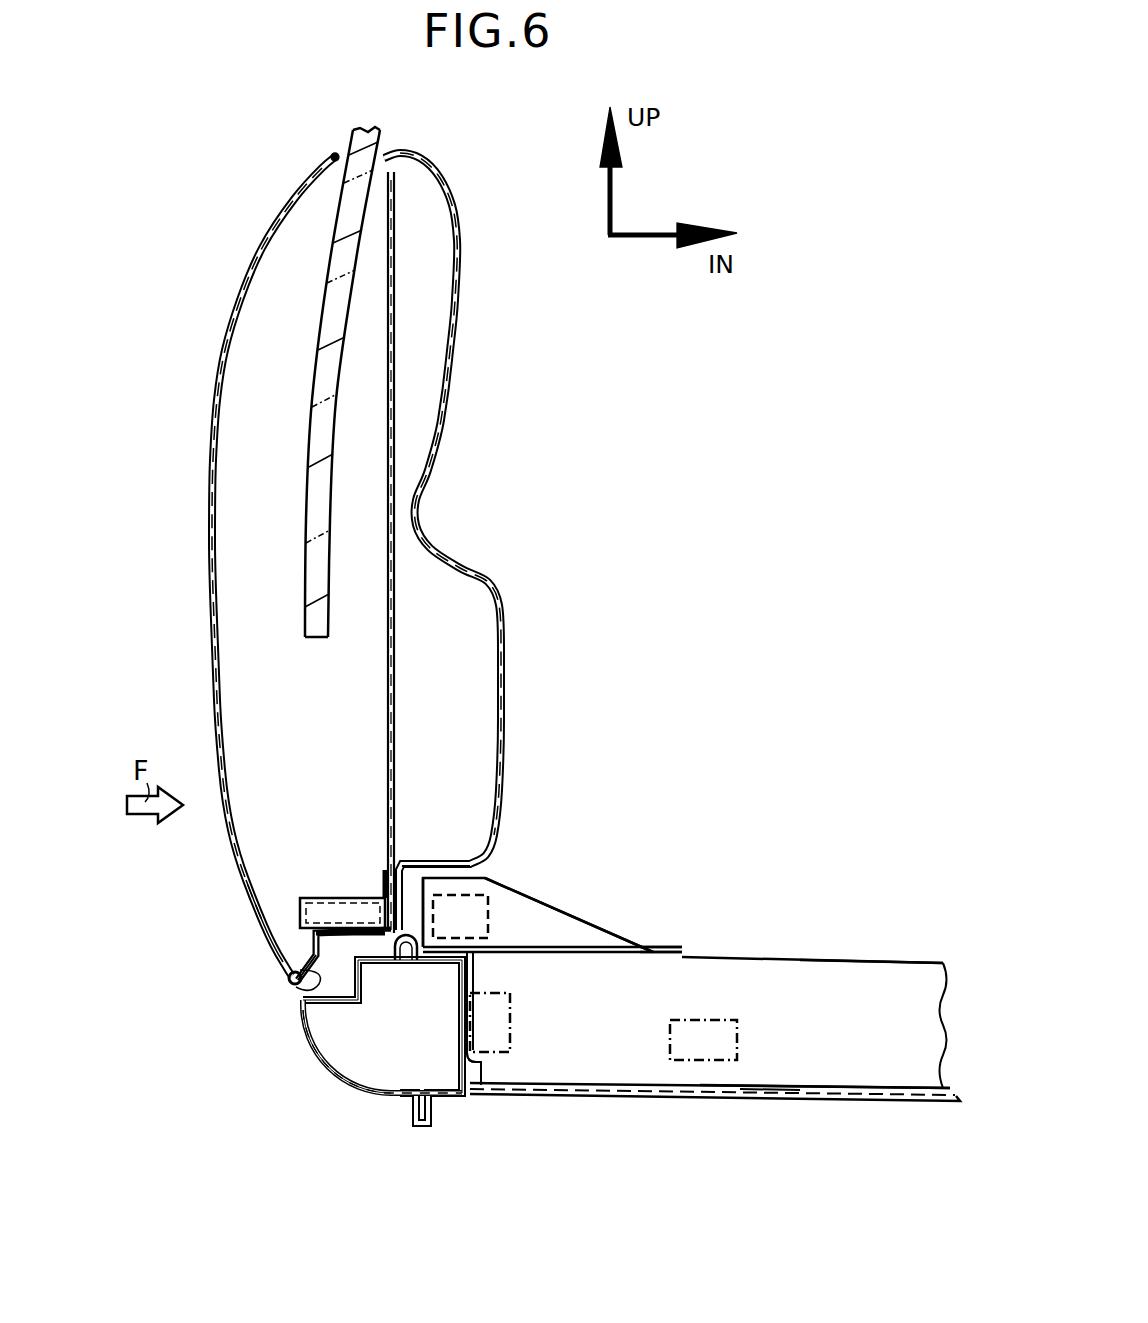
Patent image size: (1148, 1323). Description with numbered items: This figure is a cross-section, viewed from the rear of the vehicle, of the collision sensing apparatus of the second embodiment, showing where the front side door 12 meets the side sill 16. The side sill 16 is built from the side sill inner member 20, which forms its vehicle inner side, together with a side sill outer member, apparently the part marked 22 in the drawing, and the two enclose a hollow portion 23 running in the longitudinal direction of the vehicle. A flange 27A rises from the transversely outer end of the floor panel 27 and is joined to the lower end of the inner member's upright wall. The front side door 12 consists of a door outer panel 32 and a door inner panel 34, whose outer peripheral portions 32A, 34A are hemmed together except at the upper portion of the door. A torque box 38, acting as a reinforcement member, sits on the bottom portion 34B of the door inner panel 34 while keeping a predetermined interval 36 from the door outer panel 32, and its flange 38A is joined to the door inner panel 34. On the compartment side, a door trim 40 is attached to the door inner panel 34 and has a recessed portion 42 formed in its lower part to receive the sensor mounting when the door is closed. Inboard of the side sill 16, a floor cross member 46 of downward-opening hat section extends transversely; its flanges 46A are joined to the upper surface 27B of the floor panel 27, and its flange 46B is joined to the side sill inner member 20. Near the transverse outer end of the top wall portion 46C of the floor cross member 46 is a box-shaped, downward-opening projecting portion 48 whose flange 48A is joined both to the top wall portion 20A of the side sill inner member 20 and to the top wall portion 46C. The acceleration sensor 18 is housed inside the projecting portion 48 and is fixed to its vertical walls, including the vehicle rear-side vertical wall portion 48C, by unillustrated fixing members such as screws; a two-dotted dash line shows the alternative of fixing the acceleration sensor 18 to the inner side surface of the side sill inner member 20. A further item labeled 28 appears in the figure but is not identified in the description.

The front side door 12 is at (135, 563).
The side sill 16 is at (422, 1203).
The acceleration sensor 18 is at (481, 892).
The side sill inner member 20 is at (447, 1112).
The top wall portion 20A is at (393, 966).
The roof side rail outer panel 22 is at (376, 1112).
The hollow portion 23 is at (412, 1064).
The floor panel 27 is at (833, 1084).
The flange 27A is at (478, 1068).
The upper surface 27B is at (772, 1084).
The gap 28 is at (410, 905).
The door outer panel 32 is at (204, 580).
The outer peripheral portion 32A is at (284, 968).
The door inner panel 34 is at (383, 637).
The outer peripheral portion 34A is at (300, 988).
The bottom portion 34B is at (334, 931).
The predetermined interval 36 is at (279, 929).
The torque box 38 is at (318, 892).
The flange 38A is at (363, 930).
The door trim 40 is at (508, 657).
The recessed portion 42 is at (465, 860).
The floor cross member 46 is at (851, 955).
The flanges 46A is at (893, 1086).
The flange 46B is at (471, 967).
The top wall portion 46C is at (886, 961).
The projecting portion 48 is at (586, 912).
The flange 48A is at (665, 950).
The vehicle rear-side vertical wall portion 48C is at (532, 908).